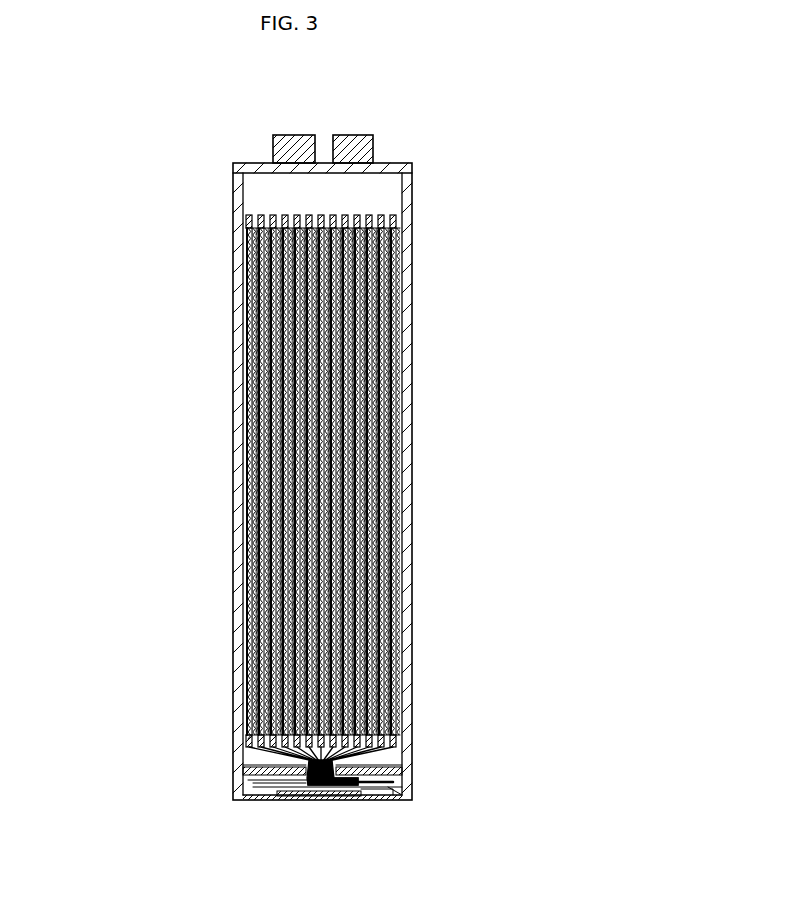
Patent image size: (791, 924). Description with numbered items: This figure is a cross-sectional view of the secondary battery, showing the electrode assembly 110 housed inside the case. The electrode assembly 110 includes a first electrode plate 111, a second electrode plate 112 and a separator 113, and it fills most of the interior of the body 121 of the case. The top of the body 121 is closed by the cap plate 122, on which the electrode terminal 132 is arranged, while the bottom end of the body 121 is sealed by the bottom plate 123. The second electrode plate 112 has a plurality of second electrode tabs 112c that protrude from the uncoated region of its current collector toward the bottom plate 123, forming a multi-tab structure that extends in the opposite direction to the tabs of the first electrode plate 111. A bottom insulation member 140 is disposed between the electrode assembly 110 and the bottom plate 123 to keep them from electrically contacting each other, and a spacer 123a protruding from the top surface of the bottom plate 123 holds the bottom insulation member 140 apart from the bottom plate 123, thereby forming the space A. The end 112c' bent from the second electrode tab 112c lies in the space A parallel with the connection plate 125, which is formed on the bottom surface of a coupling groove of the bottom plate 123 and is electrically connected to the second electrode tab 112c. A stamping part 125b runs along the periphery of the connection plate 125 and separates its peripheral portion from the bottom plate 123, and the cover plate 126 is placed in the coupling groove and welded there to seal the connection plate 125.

The electrode assembly 110 is at (224, 488).
The first electrode plate 111 is at (238, 628).
The second electrode plate 112 is at (238, 672).
The separator 113 is at (238, 717).
The second electrode tab 112c is at (211, 787).
The end of second electrode tab 112c' is at (330, 826).
The body 121 is at (403, 190).
The cap plate 122 is at (395, 155).
The bottom plate 123 is at (378, 783).
The spacer 123a is at (387, 782).
The connection plate 125 is at (302, 788).
The stamping part 125b is at (367, 790).
The cover plate 126 is at (275, 788).
The electrode terminal 132 is at (343, 137).
The bottom insulation member 140 is at (388, 758).
The space A is at (263, 775).